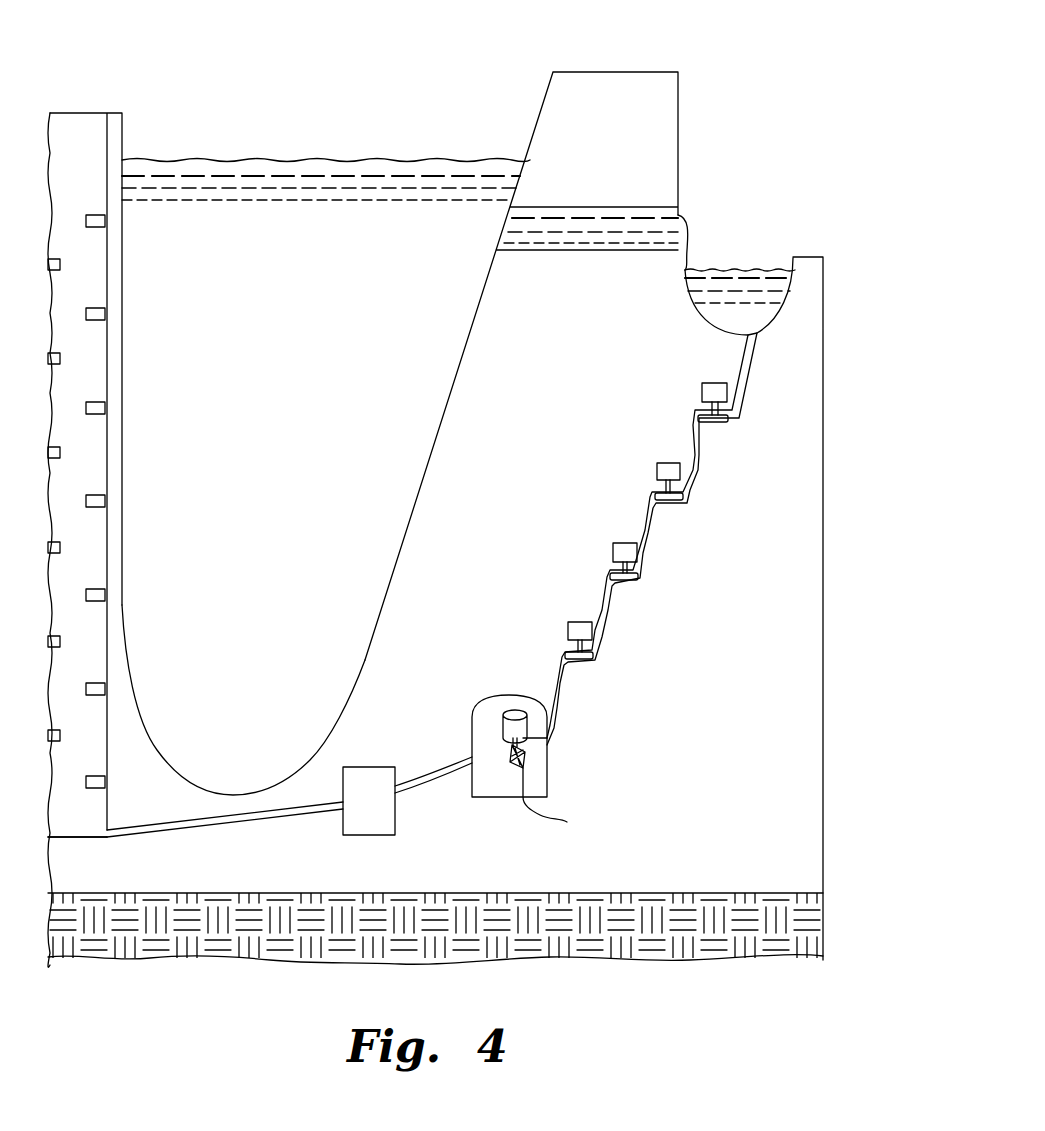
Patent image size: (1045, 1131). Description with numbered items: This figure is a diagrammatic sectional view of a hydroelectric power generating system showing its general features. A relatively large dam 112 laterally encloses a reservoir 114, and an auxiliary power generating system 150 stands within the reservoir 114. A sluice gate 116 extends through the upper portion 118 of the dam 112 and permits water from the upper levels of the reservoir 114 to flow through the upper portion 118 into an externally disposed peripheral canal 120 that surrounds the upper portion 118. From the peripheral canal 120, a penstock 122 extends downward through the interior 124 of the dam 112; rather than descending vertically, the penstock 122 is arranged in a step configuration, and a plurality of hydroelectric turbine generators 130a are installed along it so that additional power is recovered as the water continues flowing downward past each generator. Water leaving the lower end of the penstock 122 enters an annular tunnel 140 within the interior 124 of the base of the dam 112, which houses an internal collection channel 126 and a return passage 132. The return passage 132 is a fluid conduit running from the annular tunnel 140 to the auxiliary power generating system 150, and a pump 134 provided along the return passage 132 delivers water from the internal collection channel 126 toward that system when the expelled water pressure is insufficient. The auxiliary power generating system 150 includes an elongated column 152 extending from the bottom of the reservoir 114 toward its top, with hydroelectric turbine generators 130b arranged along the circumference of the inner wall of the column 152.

The dam 112 is at (824, 295).
The reservoir 114 is at (303, 128).
The sluice gate 116 is at (690, 235).
The upper portion 118 is at (680, 100).
The peripheral canal 120 is at (755, 245).
The penstock 122 is at (745, 355).
The interior 124 is at (762, 648).
The internal collection channel 126 is at (563, 809).
The hydroelectric turbine generator 130a is at (703, 393).
The hydroelectric turbine generator 130b is at (60, 265).
The return passage 132 is at (296, 806).
The pump 134 is at (345, 767).
The annular tunnel 140 is at (468, 688).
The auxiliary power generating system 150 is at (79, 100).
The column 152 is at (152, 347).